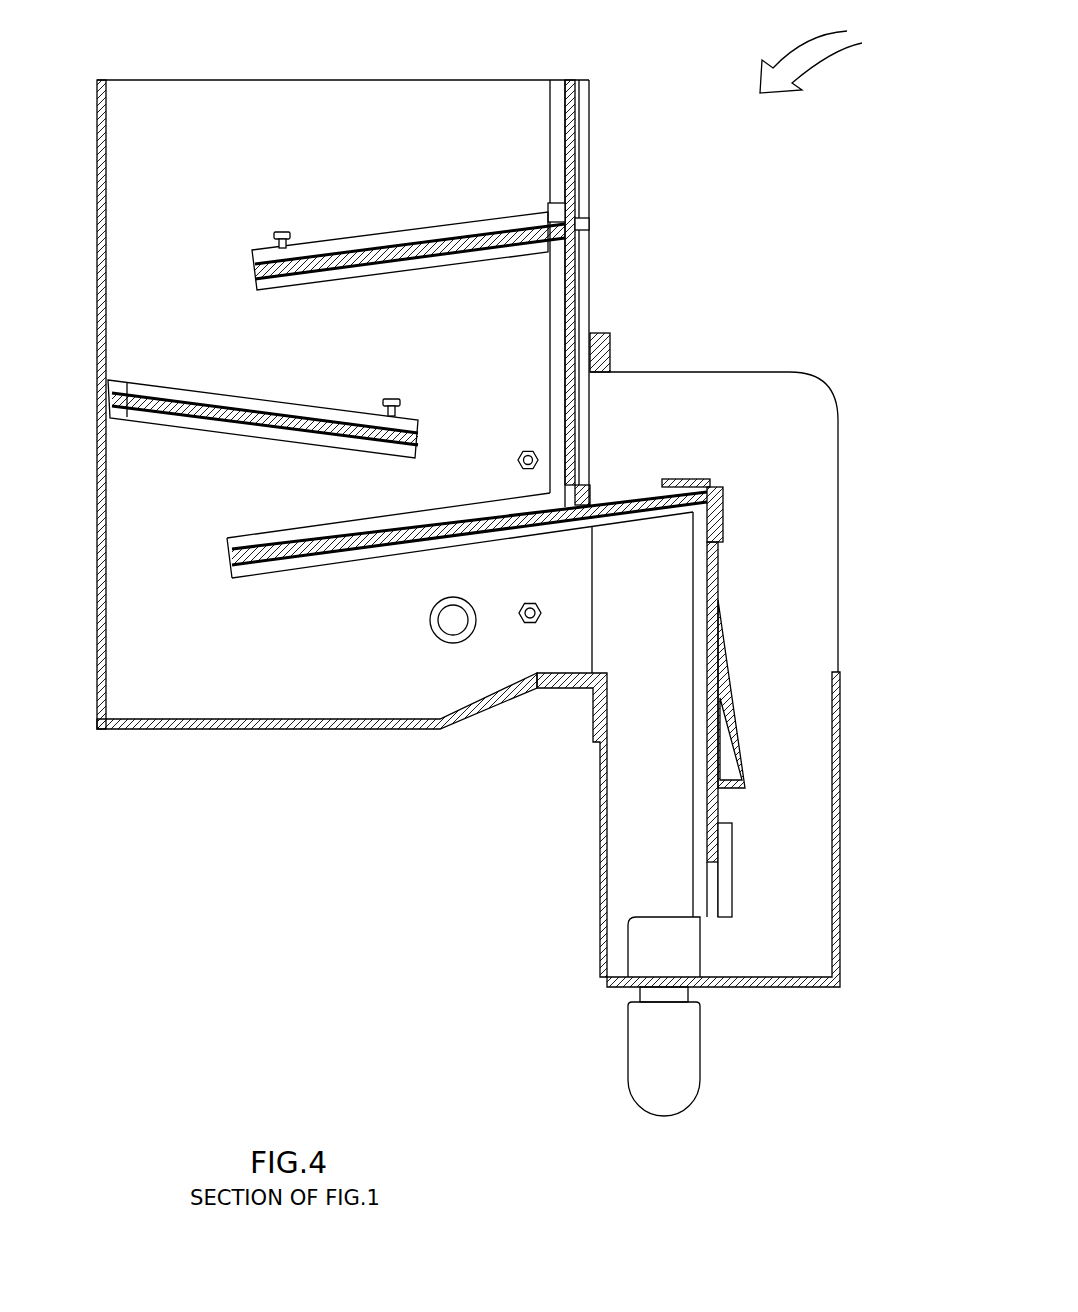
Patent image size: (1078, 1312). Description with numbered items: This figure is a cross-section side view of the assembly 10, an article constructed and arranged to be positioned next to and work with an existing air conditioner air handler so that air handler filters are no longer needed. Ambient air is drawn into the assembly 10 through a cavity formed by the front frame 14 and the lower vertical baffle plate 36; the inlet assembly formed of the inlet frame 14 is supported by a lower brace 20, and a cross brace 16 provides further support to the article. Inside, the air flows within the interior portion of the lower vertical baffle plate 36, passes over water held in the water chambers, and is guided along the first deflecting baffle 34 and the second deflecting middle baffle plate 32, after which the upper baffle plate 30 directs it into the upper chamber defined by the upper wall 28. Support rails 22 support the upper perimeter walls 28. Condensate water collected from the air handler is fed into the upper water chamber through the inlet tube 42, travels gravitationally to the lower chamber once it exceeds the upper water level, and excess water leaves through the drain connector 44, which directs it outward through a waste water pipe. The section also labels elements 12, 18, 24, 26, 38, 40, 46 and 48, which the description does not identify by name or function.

The assembly 10 is at (828, 57).
The container 12 is at (250, 80).
The front frame 14 is at (743, 372).
The cross brace 16 is at (610, 335).
The flange 18 is at (715, 479).
The lower brace 20 is at (567, 692).
The support rails 22 is at (350, 245).
The mounting block 24 is at (548, 205).
The support block 26 is at (595, 487).
The upper wall 28 is at (577, 150).
The upper baffle plate 30 is at (430, 240).
The second deflecting middle baffle plate 32 is at (173, 397).
The first deflecting baffle 34 is at (263, 547).
The lower vertical baffle plate 36 is at (725, 596).
The screw 38 is at (276, 233).
The nut 40 is at (523, 623).
The inlet tube 42 is at (442, 642).
The drain connector 44 is at (628, 1077).
The stem 46 is at (640, 1002).
The mounting block 48 is at (628, 946).